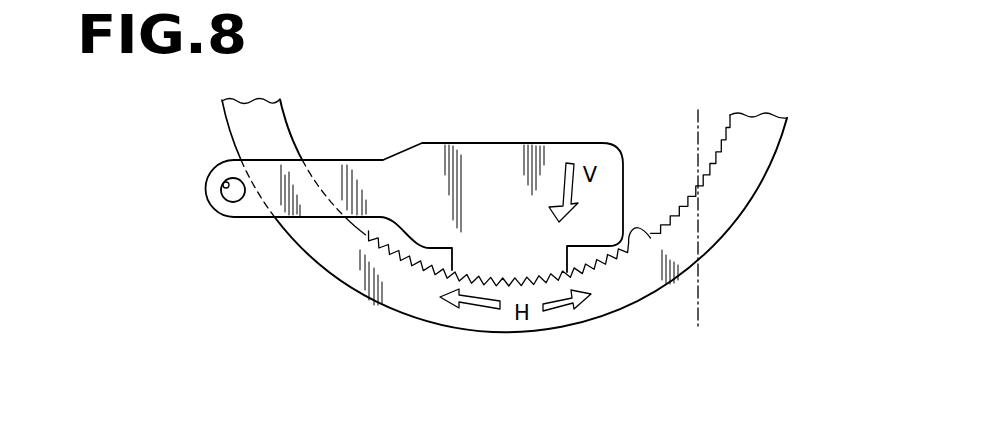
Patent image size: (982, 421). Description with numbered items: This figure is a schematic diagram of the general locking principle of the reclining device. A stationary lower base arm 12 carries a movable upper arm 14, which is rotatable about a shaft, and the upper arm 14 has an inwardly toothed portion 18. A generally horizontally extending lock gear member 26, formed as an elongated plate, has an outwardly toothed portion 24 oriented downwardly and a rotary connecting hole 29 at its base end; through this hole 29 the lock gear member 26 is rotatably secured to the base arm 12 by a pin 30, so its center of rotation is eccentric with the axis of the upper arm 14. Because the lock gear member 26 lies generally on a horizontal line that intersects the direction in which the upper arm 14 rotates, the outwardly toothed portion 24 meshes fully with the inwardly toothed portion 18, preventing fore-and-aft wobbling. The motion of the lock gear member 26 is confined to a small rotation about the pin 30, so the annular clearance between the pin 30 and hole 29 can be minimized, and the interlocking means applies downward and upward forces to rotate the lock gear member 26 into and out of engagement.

The lower base arm 12 is at (700, 278).
The upper arm 14 is at (320, 258).
The inwardly toothed portion 18 is at (633, 243).
The outwardly toothed portion 24 is at (486, 280).
The lock gear member 26 is at (398, 150).
The rotary connecting hole 29 is at (223, 186).
The pin 30 is at (235, 193).